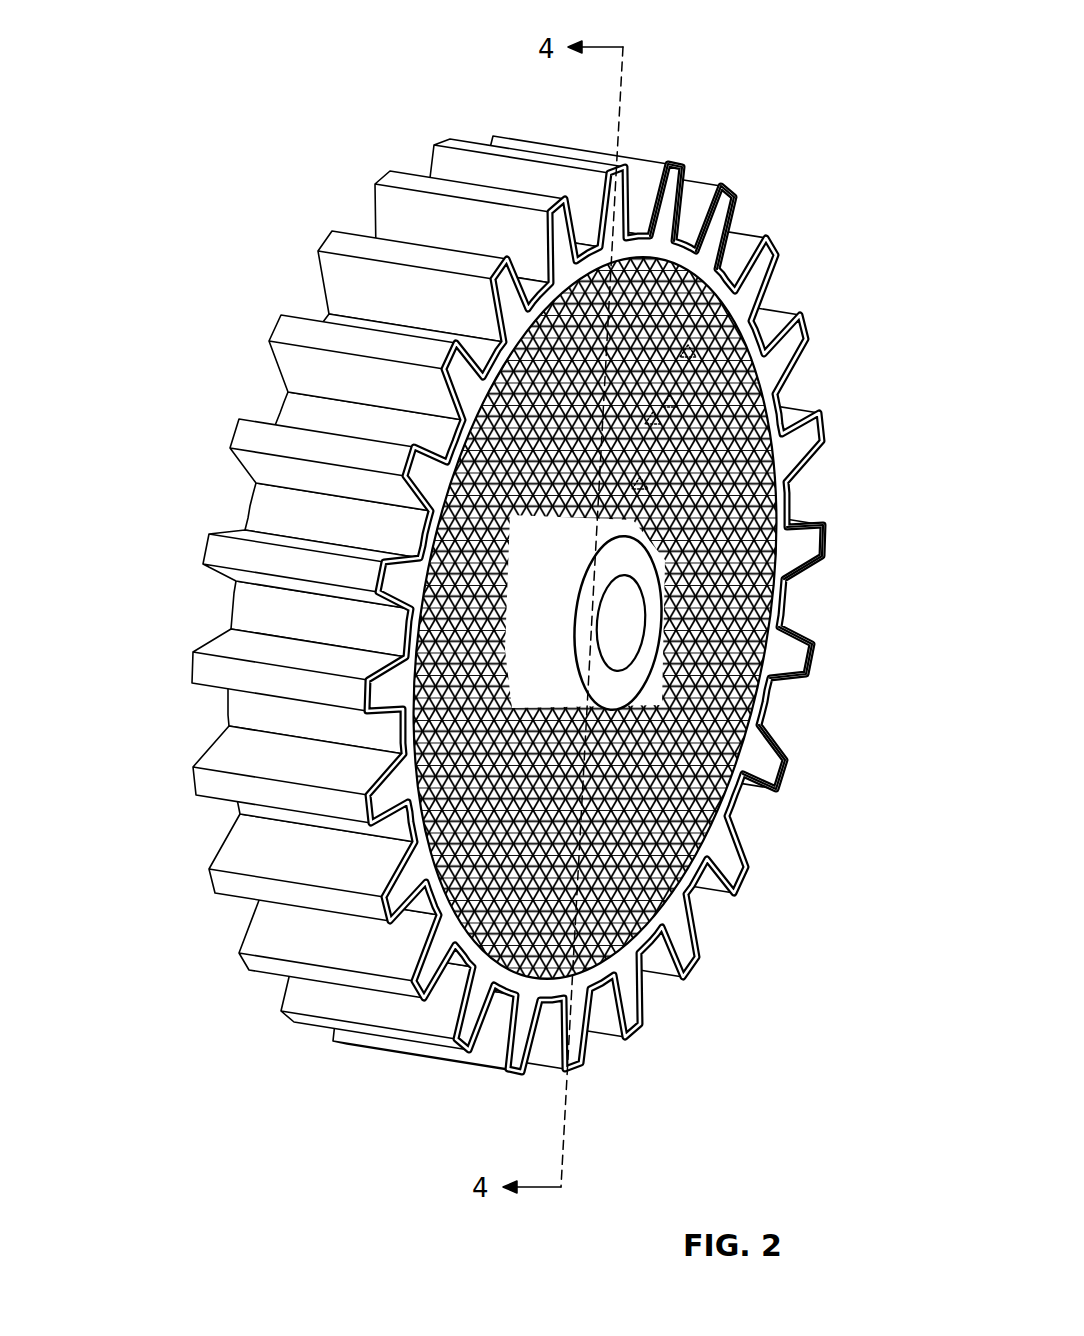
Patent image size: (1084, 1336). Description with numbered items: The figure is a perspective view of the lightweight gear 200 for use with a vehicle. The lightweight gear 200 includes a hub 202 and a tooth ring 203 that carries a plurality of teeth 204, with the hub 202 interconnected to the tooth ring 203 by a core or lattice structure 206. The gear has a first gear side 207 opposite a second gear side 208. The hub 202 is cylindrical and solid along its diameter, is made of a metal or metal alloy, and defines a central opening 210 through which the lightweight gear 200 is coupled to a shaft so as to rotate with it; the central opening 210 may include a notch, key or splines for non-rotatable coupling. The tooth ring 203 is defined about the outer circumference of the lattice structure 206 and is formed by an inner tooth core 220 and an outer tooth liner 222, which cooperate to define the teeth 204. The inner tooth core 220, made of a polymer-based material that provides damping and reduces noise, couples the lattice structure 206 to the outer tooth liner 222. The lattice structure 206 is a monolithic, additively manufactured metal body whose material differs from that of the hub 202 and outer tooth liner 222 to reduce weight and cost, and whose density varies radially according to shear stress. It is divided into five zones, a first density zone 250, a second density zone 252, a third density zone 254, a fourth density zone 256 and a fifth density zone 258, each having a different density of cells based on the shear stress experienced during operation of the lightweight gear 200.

The lightweight gear 200 is at (818, 48).
The hub 202 is at (628, 550).
The tooth ring 203 is at (704, 167).
The teeth 204 is at (754, 194).
The lattice structure 206 is at (760, 335).
The first gear side 207 is at (766, 922).
The second gear side 208 is at (146, 748).
The central opening 210 is at (607, 635).
The inner tooth core 220 is at (800, 658).
The outer tooth liner 222 is at (845, 538).
The first density zone 250 is at (637, 515).
The second density zone 252 is at (640, 477).
The third density zone 254 is at (653, 412).
The fourth density zone 256 is at (670, 395).
The fifth density zone 258 is at (688, 345).